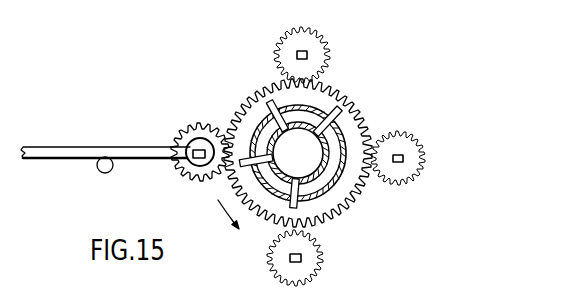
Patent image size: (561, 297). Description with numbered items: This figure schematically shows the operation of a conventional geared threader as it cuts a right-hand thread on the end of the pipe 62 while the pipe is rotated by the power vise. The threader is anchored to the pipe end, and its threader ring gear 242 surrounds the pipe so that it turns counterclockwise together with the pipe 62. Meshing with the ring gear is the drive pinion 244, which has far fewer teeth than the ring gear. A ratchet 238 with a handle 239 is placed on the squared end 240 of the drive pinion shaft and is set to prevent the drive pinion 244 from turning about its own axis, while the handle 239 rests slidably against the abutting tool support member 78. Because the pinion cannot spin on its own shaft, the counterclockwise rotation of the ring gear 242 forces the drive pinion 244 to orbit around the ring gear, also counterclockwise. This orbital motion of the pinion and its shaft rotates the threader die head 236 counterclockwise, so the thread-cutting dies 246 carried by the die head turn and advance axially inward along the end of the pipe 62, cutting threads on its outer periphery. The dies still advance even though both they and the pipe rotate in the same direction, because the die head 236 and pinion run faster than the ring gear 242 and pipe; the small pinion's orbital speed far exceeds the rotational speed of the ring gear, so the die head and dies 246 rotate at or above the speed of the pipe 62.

The pipe 62 is at (322, 140).
The tool support member 78 is at (105, 173).
The threader die head 236 is at (347, 133).
The ratchet 238 is at (178, 156).
The handle 239 is at (135, 147).
The squared end 240 is at (197, 145).
The threader ring gear 242 is at (243, 107).
The drive pinion 244 is at (200, 124).
The thread-cutting dies 246 is at (270, 97).